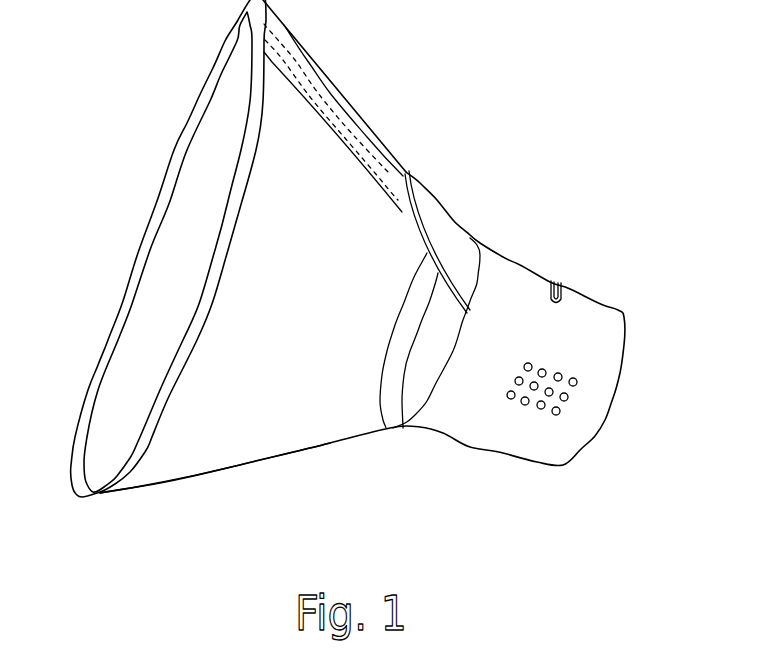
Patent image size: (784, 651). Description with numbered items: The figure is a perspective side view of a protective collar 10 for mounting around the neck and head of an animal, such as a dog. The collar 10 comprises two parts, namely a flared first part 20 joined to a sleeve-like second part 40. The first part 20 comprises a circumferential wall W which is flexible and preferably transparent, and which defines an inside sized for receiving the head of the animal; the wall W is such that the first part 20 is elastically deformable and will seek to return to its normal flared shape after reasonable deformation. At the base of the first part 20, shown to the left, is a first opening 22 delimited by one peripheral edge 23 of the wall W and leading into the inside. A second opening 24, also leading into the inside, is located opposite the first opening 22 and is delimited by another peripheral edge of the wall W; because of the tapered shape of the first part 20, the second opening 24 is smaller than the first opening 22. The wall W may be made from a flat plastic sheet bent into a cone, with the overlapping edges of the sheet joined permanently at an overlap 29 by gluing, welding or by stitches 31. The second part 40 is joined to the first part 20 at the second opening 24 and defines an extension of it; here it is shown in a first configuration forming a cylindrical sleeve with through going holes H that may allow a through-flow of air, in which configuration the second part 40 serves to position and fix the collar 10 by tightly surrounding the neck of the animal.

The protective collar 10 is at (590, 138).
The flared first part 20 is at (321, 332).
The first opening 22 is at (162, 297).
The peripheral edge 23 is at (205, 75).
The second opening 24 is at (404, 431).
The overlap 29 is at (380, 153).
The stitches 31 is at (320, 108).
The sleeve-like second part 40 is at (593, 297).
The through going holes H is at (566, 396).
The circumferential wall W is at (202, 473).